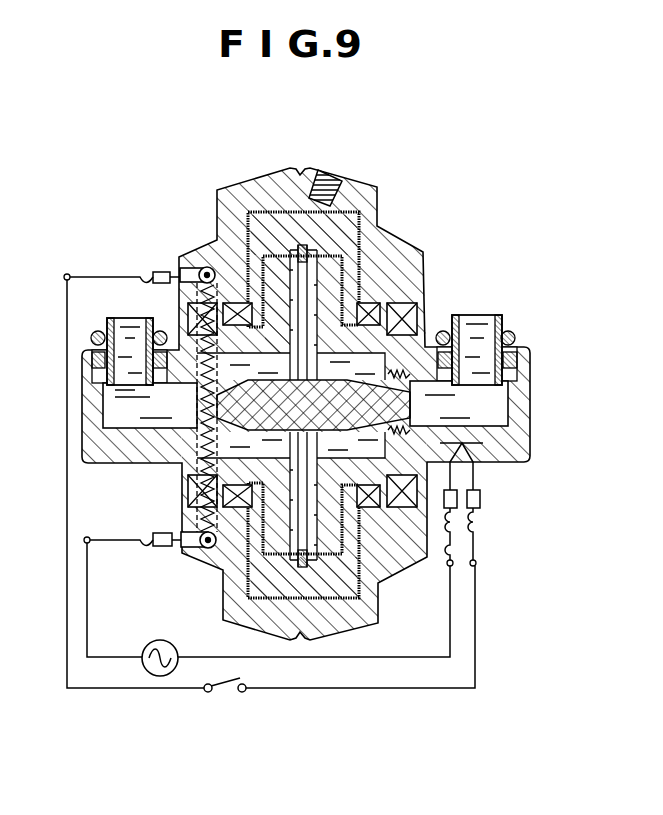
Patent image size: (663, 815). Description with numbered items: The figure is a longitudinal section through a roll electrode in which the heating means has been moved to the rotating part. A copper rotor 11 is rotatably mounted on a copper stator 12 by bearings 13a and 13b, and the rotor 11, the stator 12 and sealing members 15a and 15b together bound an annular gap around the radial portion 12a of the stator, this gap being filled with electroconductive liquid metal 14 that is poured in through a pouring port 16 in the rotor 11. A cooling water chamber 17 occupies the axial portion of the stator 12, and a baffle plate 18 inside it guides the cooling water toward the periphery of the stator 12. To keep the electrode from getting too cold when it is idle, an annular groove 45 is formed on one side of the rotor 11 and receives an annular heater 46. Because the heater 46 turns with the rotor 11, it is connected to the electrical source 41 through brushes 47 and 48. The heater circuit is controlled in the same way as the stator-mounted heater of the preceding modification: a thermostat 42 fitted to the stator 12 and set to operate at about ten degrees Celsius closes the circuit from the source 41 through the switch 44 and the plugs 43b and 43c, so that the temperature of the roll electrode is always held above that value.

The rotor 11 is at (370, 212).
The stator 12 is at (518, 403).
The radial portion 12a is at (343, 237).
The bearing 13a is at (417, 313).
The bearing 13b is at (188, 320).
The liquid metal 14 is at (347, 273).
The sealing member 15a is at (370, 303).
The sealing member 15b is at (242, 303).
The pouring port 16 is at (337, 170).
The cooling water chamber 17 is at (485, 330).
The baffle plate 18 is at (258, 207).
The source 41 is at (172, 640).
The thermostat 42 is at (488, 463).
The plug 43b is at (450, 542).
The plug 43c is at (476, 530).
The switch 44 is at (212, 692).
The annular groove 45 is at (192, 268).
The annular heater 46 is at (197, 408).
The brush 47 is at (148, 273).
The brush 48 is at (155, 547).